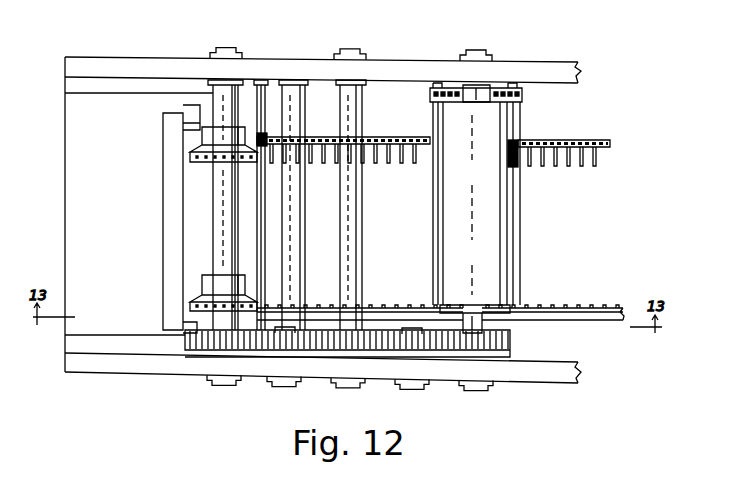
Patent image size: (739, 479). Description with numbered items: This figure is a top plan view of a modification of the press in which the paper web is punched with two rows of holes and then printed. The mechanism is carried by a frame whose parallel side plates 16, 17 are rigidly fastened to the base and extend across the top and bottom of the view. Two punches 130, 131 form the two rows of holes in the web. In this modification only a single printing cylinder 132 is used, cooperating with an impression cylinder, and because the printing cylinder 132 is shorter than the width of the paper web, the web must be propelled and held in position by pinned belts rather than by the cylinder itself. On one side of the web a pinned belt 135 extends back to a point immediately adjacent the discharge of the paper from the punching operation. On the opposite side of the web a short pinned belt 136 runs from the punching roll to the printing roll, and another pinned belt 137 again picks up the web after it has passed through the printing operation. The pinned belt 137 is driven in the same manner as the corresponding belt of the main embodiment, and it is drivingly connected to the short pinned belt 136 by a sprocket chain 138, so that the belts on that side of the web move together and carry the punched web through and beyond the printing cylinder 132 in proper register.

The side plate 16 is at (147, 365).
The side plate 17 is at (153, 57).
The punch 130 is at (193, 158).
The punch 131 is at (190, 304).
The printing cylinder 132 is at (503, 227).
The pinned belt 135 is at (587, 320).
The short pinned belt 136 is at (386, 137).
The pinned belt 137 is at (555, 140).
The sprocket chain 138 is at (493, 92).